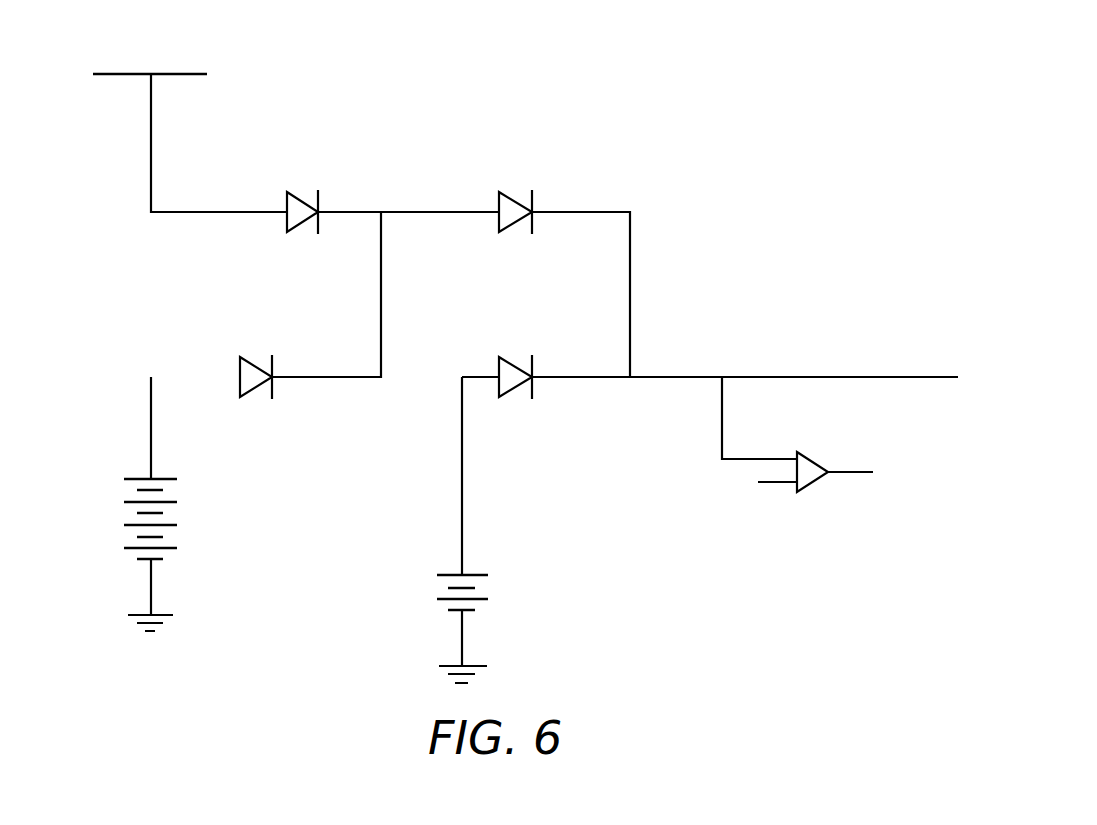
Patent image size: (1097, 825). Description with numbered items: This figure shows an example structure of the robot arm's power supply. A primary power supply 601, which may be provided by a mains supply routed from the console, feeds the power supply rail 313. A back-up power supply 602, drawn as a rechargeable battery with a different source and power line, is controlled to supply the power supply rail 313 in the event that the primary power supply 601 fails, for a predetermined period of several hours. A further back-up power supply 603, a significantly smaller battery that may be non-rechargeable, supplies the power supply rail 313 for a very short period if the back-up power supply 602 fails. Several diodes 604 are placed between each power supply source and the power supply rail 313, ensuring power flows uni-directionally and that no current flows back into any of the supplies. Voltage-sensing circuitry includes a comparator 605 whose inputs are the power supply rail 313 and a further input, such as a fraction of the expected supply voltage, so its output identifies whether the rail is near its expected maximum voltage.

The primary power supply 601 is at (127, 73).
The back-up power supply 602 is at (124, 511).
The further back-up power supply 603 is at (434, 586).
The diode 604 is at (300, 200).
The comparator 605 is at (810, 488).
The power supply rail 313 is at (930, 375).